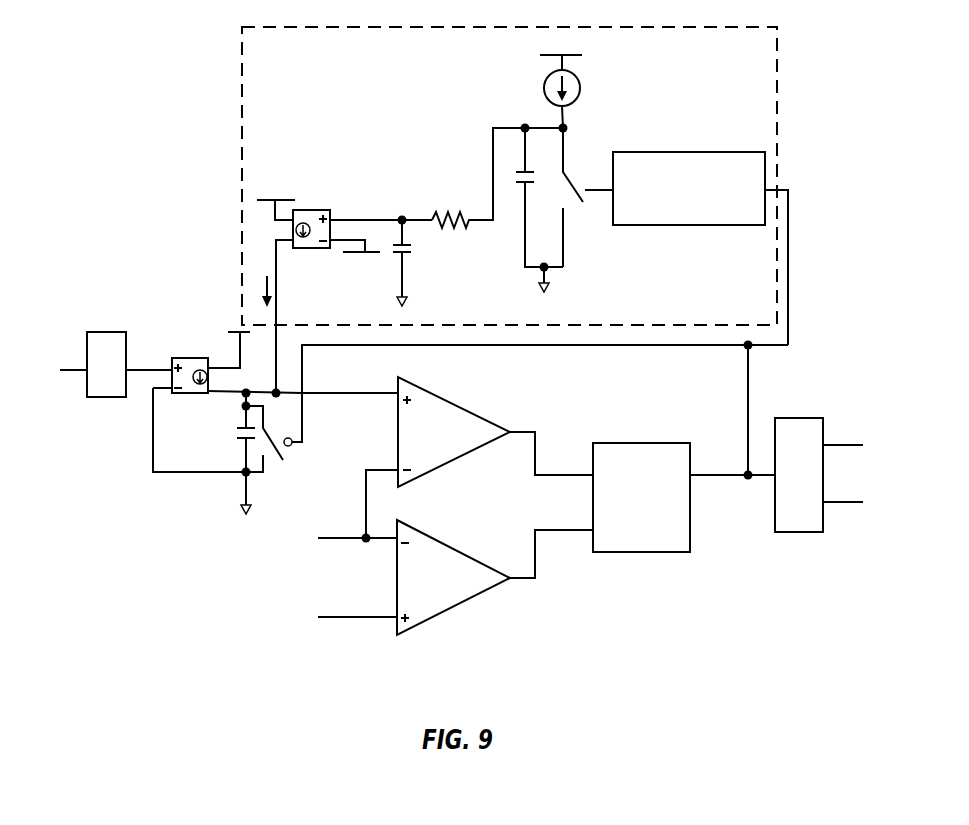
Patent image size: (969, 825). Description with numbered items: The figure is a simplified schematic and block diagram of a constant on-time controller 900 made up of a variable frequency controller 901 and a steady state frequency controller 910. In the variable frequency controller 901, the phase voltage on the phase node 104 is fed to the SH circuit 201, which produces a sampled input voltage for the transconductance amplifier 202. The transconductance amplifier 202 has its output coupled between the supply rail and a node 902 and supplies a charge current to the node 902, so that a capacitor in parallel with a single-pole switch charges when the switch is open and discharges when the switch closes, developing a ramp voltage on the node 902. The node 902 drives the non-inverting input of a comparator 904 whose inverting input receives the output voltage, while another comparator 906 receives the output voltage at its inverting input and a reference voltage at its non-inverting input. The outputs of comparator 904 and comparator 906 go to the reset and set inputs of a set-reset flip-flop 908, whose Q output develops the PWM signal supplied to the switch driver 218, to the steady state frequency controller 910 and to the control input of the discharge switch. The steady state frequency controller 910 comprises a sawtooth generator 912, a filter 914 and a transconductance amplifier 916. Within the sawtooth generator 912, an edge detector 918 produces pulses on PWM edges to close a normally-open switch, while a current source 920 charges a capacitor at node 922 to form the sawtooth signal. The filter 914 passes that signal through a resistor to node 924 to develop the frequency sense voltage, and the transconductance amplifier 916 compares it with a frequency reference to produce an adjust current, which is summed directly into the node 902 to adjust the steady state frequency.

The controller 900 is at (176, 129).
The steady state frequency controller 910 is at (770, 68).
The sawtooth generator 912 is at (667, 264).
The filter 914 is at (433, 157).
The transconductance amplifier 916 is at (317, 209).
The edge detector 918 is at (660, 151).
The current source 920 is at (581, 93).
The node 922 is at (523, 126).
The node 924 is at (399, 218).
The node 902 is at (280, 396).
The comparator 904 is at (479, 457).
The comparator 906 is at (450, 568).
The set-reset flip-flop 908 is at (684, 447).
The transconductance amplifier 202 is at (188, 357).
The SH circuit 201 is at (106, 364).
The phase node 104 is at (72, 371).
The switch driver 218 is at (813, 417).
The variable frequency controller 901 is at (192, 539).